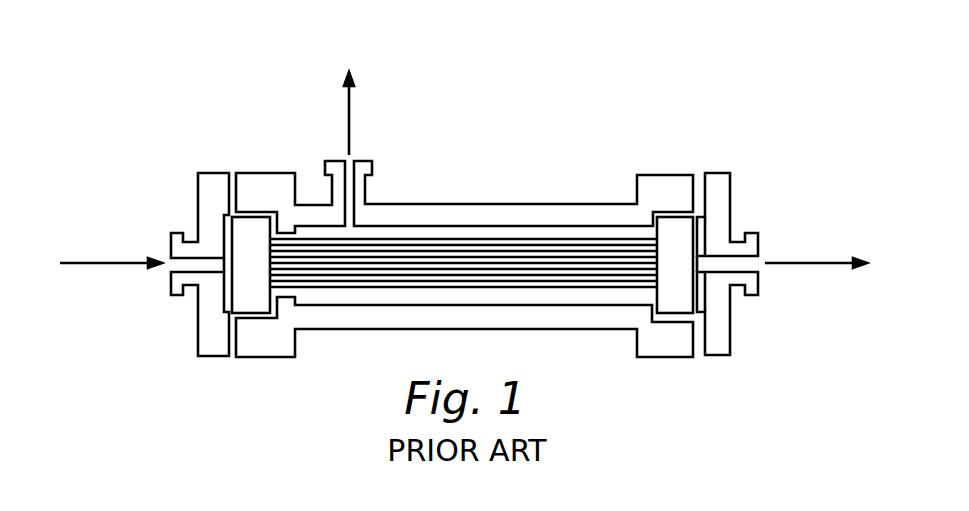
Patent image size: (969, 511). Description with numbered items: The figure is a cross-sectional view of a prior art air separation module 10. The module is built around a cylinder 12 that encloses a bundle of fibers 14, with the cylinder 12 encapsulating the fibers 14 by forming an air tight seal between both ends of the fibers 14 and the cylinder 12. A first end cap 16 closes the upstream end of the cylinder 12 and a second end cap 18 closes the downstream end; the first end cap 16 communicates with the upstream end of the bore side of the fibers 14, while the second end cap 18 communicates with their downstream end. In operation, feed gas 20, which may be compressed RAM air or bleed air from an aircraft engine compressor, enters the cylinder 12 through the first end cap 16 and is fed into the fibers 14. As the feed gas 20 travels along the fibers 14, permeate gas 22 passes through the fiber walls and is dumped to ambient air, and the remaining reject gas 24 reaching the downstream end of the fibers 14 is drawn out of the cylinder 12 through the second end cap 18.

The prior art air separation module 10 is at (576, 68).
The cylinder 12 is at (455, 204).
The fibers 14 is at (608, 289).
The first end cap 16 is at (213, 173).
The second end cap 18 is at (716, 173).
The feed gas 20 is at (105, 262).
The permeate gas 22 is at (347, 123).
The reject gas 24 is at (805, 263).